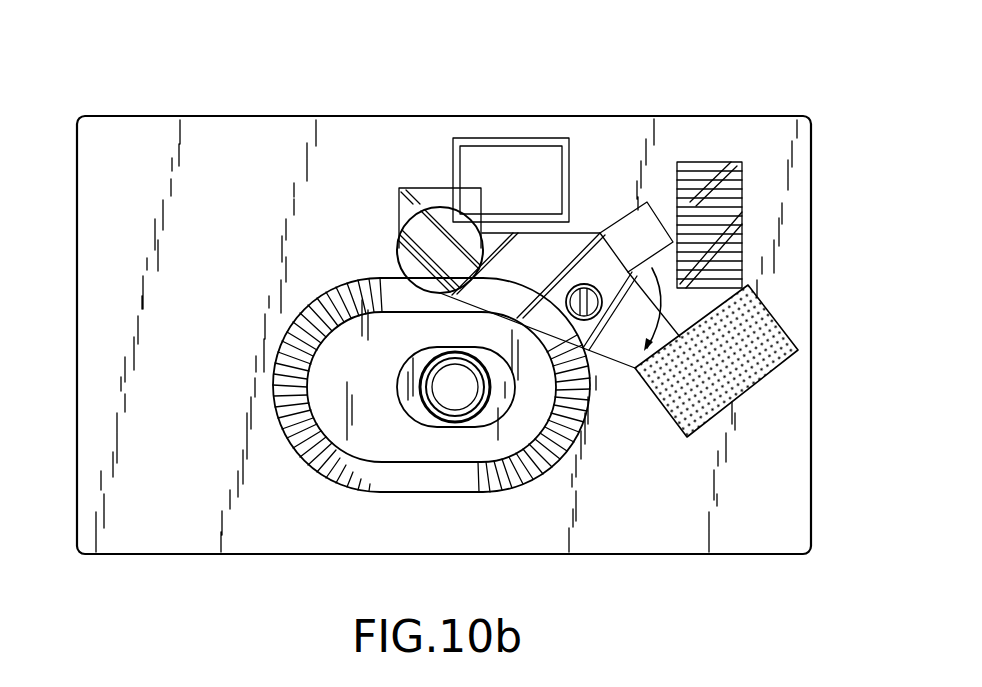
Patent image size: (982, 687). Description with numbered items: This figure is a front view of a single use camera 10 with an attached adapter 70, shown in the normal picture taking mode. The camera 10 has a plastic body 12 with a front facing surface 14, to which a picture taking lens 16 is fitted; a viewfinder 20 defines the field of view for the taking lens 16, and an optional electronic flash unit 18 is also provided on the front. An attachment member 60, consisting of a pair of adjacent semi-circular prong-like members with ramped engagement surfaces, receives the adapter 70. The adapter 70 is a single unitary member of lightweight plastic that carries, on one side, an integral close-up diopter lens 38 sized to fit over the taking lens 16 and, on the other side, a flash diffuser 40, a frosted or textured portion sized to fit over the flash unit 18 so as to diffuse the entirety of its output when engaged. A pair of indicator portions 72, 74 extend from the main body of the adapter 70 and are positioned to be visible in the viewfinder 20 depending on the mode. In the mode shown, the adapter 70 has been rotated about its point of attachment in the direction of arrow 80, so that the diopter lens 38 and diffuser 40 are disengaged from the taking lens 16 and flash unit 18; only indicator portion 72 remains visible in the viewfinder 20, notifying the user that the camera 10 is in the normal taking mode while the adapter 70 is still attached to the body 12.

The camera 10 is at (120, 92).
The plastic body 12 is at (288, 110).
The front facing surface 14 is at (772, 445).
The picture taking lens 16 is at (455, 395).
The electronic flash unit 18 is at (728, 160).
The viewfinder 20 is at (518, 164).
The close-up diopter lens 38 is at (400, 258).
The flash diffuser 40 is at (767, 308).
The attachment member 60 is at (590, 286).
The adapter 70 is at (603, 222).
The indicator portion 72 is at (440, 188).
The indicator portion 74 is at (645, 200).
The arrow 80 is at (635, 370).